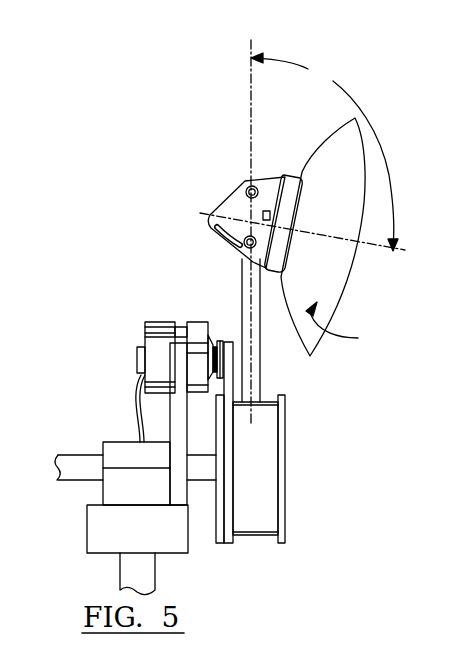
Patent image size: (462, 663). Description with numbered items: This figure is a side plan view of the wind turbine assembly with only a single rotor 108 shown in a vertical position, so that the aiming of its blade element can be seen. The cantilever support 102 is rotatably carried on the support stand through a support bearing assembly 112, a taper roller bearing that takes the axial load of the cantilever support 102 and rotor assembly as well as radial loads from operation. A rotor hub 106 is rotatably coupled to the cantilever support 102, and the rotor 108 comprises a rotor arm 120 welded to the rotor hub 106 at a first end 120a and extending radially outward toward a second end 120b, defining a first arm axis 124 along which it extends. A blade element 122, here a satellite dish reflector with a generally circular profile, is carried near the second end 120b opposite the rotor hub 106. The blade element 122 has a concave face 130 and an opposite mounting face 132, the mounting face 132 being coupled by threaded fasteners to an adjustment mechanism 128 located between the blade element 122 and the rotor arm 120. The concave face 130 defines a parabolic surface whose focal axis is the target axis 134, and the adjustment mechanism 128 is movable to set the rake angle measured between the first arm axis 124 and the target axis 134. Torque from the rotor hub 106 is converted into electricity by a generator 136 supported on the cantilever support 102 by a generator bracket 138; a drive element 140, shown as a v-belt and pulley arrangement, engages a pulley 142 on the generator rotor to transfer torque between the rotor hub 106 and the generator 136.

The cantilever support 102 is at (66, 462).
The rotor hub 106 is at (285, 487).
The rotor 108 is at (357, 82).
The support bearing assembly 112 is at (87, 523).
The rotor arm 120 is at (242, 305).
The first end 120a is at (286, 388).
The second end 120b is at (226, 197).
The blade element 122 is at (367, 158).
The first arm axis 124 is at (249, 128).
The adjustment mechanism 128 is at (214, 228).
The concave face 130 is at (347, 292).
The mounting face 132 is at (348, 325).
The target axis 134 is at (368, 250).
The generator 136 is at (150, 322).
The generator bracket 138 is at (176, 417).
The drive element 140 is at (230, 430).
The pulley 142 is at (233, 353).